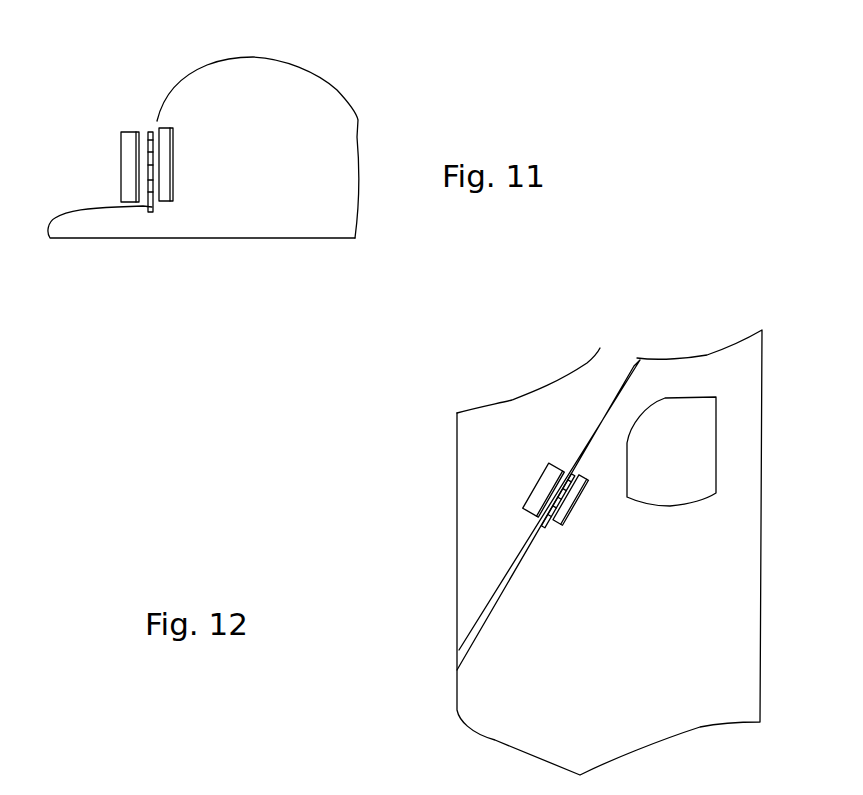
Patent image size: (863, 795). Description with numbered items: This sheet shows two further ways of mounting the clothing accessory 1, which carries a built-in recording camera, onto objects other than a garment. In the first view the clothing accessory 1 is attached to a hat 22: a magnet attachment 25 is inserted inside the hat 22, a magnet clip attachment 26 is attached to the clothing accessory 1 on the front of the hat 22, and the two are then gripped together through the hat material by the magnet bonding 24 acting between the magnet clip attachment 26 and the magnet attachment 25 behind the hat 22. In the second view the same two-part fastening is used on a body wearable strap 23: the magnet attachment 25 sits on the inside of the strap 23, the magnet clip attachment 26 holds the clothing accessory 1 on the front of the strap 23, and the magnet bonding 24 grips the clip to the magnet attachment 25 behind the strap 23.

In FIG. 11, the clothing accessory 1 is at (105, 163).
In FIG. 12, the clothing accessory 1 is at (573, 444).
In FIG. 11, the hat 22 is at (305, 112).
In FIG. 12, the strap 23 is at (628, 381).
In FIG. 11, the magnet bonding 24 is at (150, 129).
In FIG. 12, the magnet bonding 24 is at (544, 490).
In FIG. 11, the magnet attachment 25 is at (157, 127).
In FIG. 12, the magnet attachment 25 is at (571, 500).
In FIG. 11, the magnet clip attachment 26 is at (146, 196).
In FIG. 12, the magnet clip attachment 26 is at (557, 501).